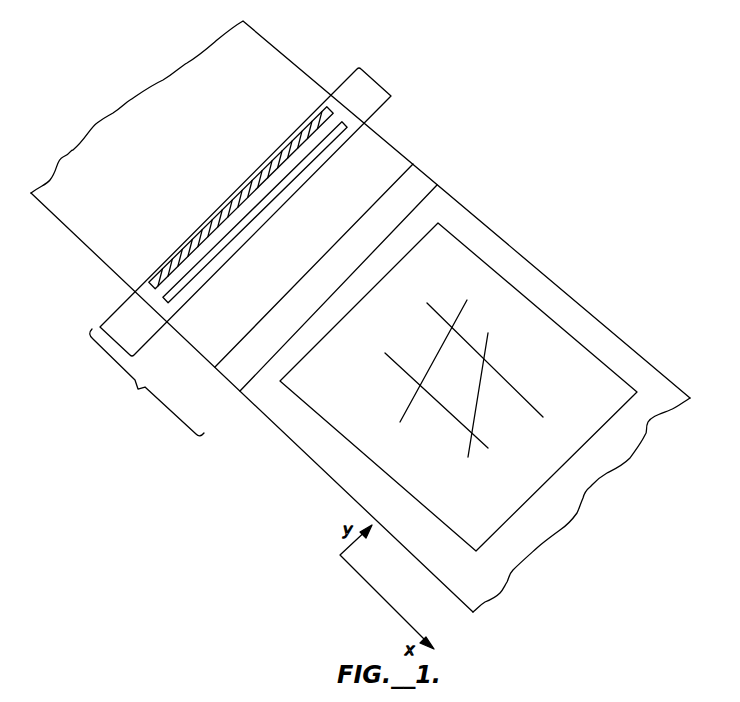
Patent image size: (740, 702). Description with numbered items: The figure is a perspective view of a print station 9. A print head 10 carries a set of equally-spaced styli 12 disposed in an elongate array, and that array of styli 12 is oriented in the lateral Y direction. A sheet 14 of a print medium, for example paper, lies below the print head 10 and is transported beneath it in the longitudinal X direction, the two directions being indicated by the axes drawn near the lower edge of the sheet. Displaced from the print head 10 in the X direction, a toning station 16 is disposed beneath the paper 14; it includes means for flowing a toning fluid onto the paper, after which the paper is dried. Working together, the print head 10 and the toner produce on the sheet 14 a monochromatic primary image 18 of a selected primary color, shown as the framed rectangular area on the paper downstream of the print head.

The print station 9 is at (147, 382).
The print head 10 is at (262, 197).
The styli 12 is at (303, 123).
The sheet of print medium 14 is at (397, 148).
The toning station 16 is at (434, 181).
The monochromatic primary image 18 is at (512, 291).